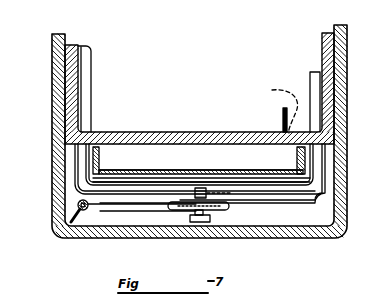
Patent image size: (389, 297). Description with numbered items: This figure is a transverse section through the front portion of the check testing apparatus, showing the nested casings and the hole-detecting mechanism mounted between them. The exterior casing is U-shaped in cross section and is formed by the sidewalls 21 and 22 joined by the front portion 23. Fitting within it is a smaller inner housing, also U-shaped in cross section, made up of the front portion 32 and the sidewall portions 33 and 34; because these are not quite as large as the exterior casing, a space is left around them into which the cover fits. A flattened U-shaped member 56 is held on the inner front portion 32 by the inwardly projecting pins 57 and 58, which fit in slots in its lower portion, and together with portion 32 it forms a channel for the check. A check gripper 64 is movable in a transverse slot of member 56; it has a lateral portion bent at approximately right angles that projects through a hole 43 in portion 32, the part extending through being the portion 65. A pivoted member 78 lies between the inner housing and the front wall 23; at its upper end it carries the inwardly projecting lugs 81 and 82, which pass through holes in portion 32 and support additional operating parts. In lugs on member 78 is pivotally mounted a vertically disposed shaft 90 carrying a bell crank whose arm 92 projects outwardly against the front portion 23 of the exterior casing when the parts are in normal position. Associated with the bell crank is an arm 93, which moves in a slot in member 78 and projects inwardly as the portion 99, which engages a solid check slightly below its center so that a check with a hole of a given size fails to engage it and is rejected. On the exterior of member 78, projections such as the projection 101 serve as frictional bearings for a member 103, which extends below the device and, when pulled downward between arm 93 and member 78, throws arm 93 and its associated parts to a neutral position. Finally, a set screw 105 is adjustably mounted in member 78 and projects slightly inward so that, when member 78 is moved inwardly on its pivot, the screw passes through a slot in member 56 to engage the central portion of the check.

The sidewall 21 is at (346, 86).
The sidewall 22 is at (54, 110).
The front portion 23 is at (80, 239).
The front portion 32 is at (200, 132).
The sidewall portion 33 is at (323, 56).
The sidewall portion 34 is at (80, 47).
The hole 43 is at (272, 90).
The flattened U-shaped member 56 is at (156, 163).
The inwardly projecting pin 57 is at (312, 160).
The inwardly projecting pin 58 is at (110, 164).
The check gripper 64 is at (252, 164).
The gripper portion 65 is at (282, 122).
The member 78 is at (133, 194).
The inwardly projecting lug 81 is at (311, 88).
The inwardly projecting lug 82 is at (86, 92).
The vertically disposed shaft 90 is at (100, 192).
The arm 92 is at (76, 212).
The arm 93 is at (120, 214).
The inwardly projecting portion 99 is at (199, 224).
The projection 101 is at (228, 211).
The member 103 is at (208, 211).
The set screw 105 is at (218, 193).